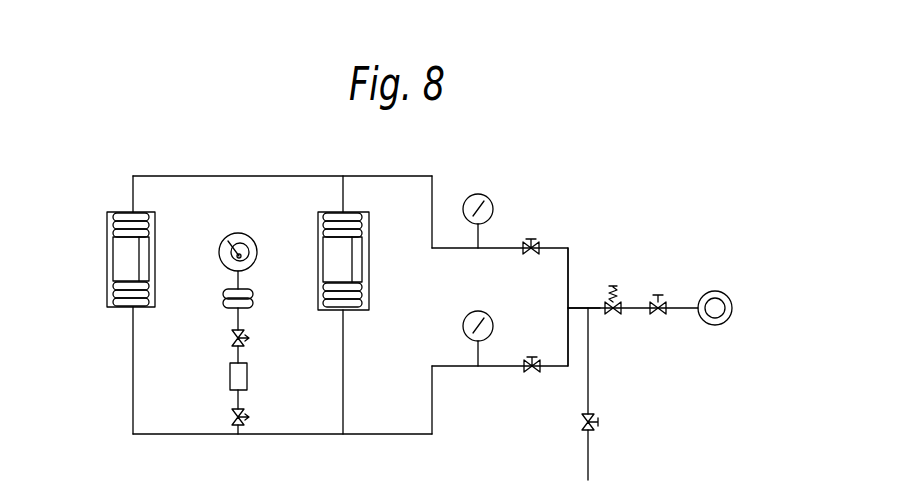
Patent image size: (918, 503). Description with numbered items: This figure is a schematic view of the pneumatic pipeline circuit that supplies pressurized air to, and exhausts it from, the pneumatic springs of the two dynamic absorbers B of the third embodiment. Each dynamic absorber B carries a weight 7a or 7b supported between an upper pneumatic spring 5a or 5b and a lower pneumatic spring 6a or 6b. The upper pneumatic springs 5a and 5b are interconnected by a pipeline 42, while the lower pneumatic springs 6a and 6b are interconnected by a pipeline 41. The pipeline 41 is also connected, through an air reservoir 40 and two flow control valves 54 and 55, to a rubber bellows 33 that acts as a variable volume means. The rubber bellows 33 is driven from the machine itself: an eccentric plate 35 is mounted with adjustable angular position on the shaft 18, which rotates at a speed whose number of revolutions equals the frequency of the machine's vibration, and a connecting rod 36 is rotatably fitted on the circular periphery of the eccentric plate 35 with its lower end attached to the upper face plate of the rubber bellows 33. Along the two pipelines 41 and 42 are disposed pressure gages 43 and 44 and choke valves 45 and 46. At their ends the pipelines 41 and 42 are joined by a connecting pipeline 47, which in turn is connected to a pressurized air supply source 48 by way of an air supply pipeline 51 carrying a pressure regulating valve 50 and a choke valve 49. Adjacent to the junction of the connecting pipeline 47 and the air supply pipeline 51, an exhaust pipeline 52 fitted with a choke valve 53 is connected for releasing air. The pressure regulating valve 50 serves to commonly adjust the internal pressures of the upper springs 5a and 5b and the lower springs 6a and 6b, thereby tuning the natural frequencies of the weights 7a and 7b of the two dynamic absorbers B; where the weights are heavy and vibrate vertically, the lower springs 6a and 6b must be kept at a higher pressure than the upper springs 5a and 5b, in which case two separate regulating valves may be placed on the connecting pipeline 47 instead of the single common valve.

The upper pneumatic spring 5a is at (131, 212).
The dynamic absorber B is at (107, 238).
The weight 7a is at (121, 263).
The lower pneumatic spring 6a is at (111, 298).
The upper pneumatic spring 5b is at (326, 226).
The weight 7b is at (352, 257).
The lower pneumatic spring 6b is at (364, 300).
The shaft 18 is at (225, 242).
The eccentric plate 35 is at (250, 262).
The connecting rod 36 is at (236, 282).
The rubber bellows 33 is at (222, 298).
The flow control valve 54 is at (232, 338).
The air reservoir 40 is at (247, 380).
The flow control valve 55 is at (232, 417).
The pipeline 41 is at (290, 435).
The pipeline 42 is at (313, 176).
The pressure gage 43 is at (484, 196).
The pressure gage 44 is at (487, 312).
The choke valve 45 is at (540, 240).
The choke valve 46 is at (527, 372).
The connecting pipeline 47 is at (569, 257).
The air supply pipeline 51 is at (582, 304).
The pressure regulating valve 50 is at (613, 316).
The choke valve 49 is at (658, 316).
The pressurized air supply source 48 is at (707, 292).
The exhaust pipeline 52 is at (590, 378).
The choke valve 53 is at (581, 422).